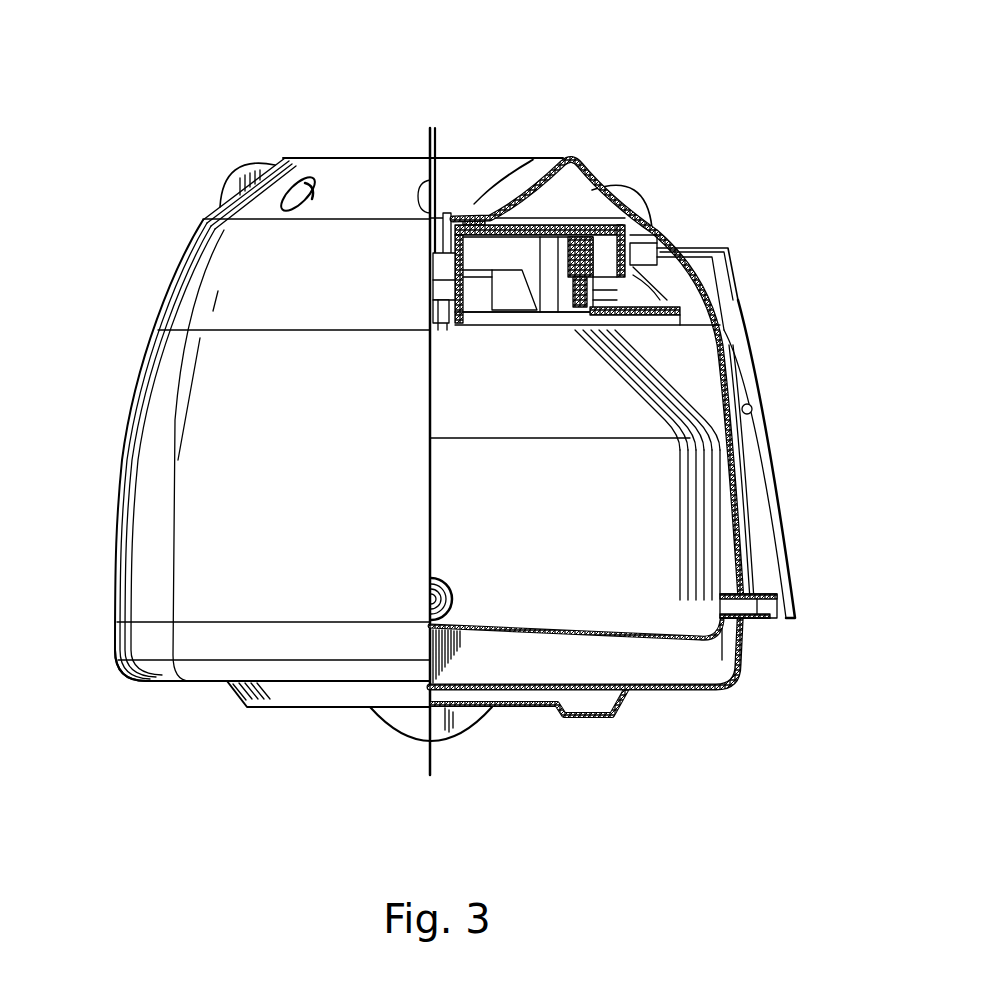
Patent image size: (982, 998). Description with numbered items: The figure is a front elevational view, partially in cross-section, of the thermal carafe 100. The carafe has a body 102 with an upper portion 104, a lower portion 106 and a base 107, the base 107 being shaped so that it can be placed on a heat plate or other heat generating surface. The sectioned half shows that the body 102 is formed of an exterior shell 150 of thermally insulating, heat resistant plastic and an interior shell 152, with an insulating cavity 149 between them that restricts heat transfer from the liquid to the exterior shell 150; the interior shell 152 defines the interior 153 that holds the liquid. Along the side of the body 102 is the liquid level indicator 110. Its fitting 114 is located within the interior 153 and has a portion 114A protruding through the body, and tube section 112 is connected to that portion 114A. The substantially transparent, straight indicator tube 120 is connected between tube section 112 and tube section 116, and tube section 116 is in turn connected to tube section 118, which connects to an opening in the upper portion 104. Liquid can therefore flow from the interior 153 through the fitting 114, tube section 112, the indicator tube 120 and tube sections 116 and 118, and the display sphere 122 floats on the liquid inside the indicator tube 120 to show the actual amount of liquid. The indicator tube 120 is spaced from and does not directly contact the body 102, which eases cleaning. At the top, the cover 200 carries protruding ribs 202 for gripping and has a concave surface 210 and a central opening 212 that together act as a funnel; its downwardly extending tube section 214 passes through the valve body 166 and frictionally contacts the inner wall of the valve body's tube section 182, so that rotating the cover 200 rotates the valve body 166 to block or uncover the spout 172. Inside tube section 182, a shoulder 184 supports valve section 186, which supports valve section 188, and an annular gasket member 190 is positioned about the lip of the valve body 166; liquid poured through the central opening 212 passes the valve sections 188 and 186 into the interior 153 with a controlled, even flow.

The thermal carafe 100 is at (126, 108).
The body 102 is at (120, 470).
The upper portion 104 is at (172, 278).
The lower portion 106 is at (113, 642).
The base 107 is at (223, 695).
The liquid level indicator 110 is at (767, 447).
The tube section 112 is at (797, 602).
The fitting 114 is at (745, 673).
The portion of fitting 114A is at (765, 607).
The tube section 116 is at (690, 245).
The tube section 118 is at (652, 230).
The indicator tube 120 is at (777, 510).
The display sphere 122 is at (752, 408).
The insulating cavity 149 is at (690, 382).
The exterior shell 150 is at (117, 572).
The interior shell 152 is at (642, 362).
The interior 153 is at (577, 544).
The valve body 166 is at (567, 310).
The spout 172 is at (358, 225).
The tube section 182 is at (462, 305).
The shoulder 184 is at (490, 318).
The valve section 186 is at (428, 412).
The valve section 188 is at (446, 250).
The annular gasket member 190 is at (512, 220).
The cover 200 is at (317, 158).
The protruding ribs 202 is at (230, 192).
The concave surface 210 is at (530, 183).
The central opening 212 is at (438, 155).
The tube section 214 is at (450, 215).